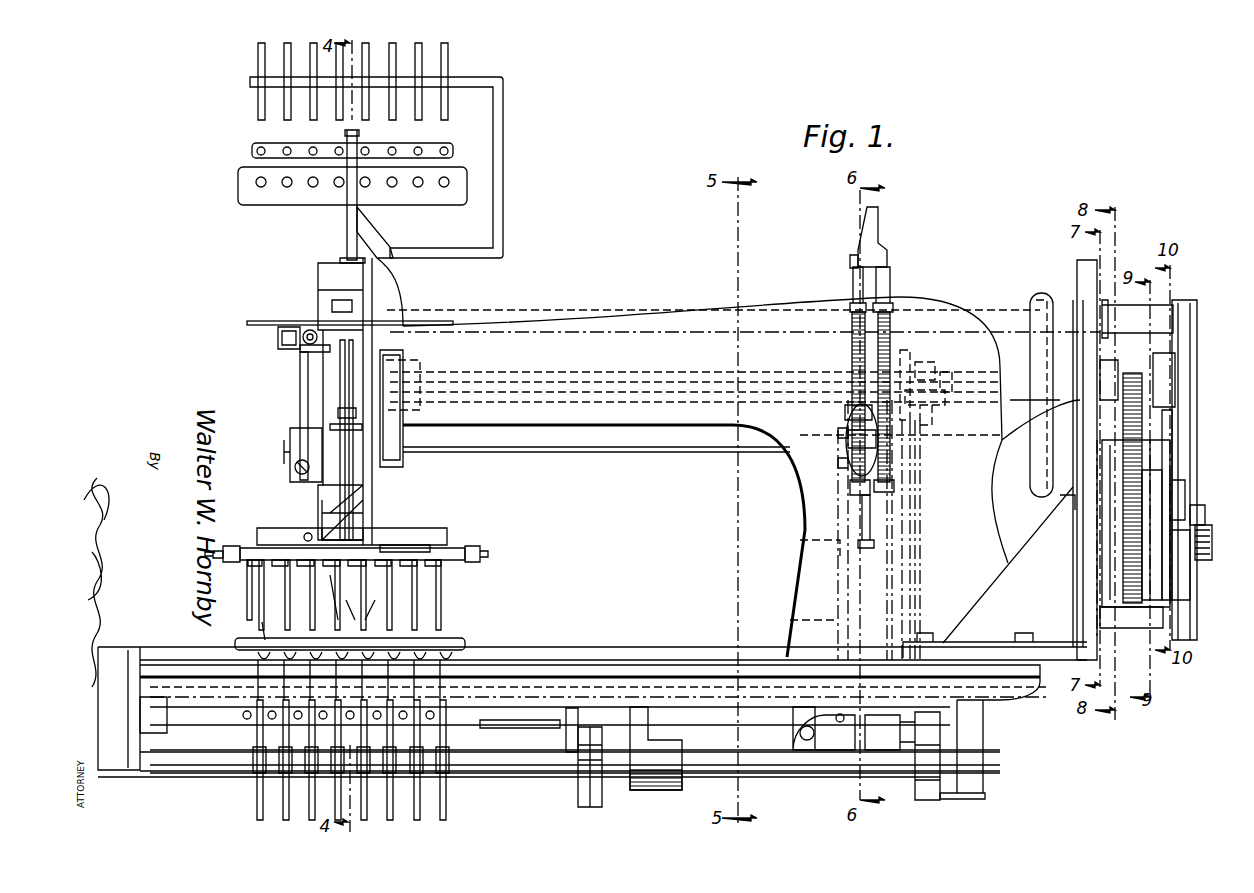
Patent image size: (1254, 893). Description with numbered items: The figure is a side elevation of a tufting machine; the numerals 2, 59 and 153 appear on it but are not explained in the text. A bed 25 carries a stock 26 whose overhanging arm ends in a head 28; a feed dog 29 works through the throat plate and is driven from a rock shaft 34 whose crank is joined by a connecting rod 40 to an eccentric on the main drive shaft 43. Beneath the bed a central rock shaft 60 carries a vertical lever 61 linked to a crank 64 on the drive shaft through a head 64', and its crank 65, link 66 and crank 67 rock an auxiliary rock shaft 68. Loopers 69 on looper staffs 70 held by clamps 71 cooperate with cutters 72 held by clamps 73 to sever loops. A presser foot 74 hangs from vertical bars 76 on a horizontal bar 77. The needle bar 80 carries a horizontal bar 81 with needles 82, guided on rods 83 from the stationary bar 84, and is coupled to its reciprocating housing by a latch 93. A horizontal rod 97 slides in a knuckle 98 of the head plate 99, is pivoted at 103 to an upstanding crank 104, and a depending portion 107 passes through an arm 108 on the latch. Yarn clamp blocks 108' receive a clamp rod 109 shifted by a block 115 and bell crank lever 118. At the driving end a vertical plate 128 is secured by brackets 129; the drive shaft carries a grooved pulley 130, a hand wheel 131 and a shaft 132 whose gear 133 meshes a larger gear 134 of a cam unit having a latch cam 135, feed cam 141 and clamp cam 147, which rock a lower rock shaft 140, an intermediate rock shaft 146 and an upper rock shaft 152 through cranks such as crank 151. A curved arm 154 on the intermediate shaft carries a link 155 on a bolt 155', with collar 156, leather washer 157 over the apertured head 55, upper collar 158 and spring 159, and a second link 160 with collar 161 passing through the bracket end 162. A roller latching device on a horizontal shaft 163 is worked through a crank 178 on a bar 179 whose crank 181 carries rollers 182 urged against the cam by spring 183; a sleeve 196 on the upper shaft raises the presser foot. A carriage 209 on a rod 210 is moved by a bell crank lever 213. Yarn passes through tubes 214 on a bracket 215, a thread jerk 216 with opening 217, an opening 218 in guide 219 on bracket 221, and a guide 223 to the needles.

The arm 2 is at (708, 420).
The bed 25 is at (648, 660).
The stock 26 is at (830, 580).
The head 28 is at (395, 530).
The feed dog 29 is at (455, 640).
The rock shaft 34 is at (718, 714).
The connecting rod 40 is at (875, 552).
The main drive shaft 43 is at (767, 372).
The apertured head 55 is at (845, 440).
The screw 59 is at (866, 518).
The central rock shaft 60 is at (535, 771).
The vertical lever 61 is at (916, 728).
The crank 64 is at (939, 387).
The head 64' is at (957, 362).
The crank 65 is at (604, 780).
The link 66 is at (582, 785).
The crank 67 is at (566, 732).
The auxiliary rock shaft 68 is at (500, 722).
The loopers 69 is at (365, 655).
The looper staff 70 is at (283, 805).
The clamp 71 is at (292, 765).
The cutter or hack saw 72 is at (300, 655).
The adjustable clamp 73 is at (262, 720).
The presser foot 74 is at (262, 630).
The vertical bars 76 is at (259, 610).
The horizontal bar 77 is at (334, 575).
The needle bar 80 is at (347, 236).
The horizontal bar 81 is at (440, 552).
The needles 82 is at (356, 620).
The vertical guide rods 83 is at (270, 600).
The stationary horizontal bar 84 is at (270, 528).
The latch 93 is at (340, 400).
The horizontal rod 97 is at (308, 330).
The apertured knuckle 98 is at (300, 349).
The head plate 99 is at (340, 283).
The pivot 103 is at (279, 339).
The upstanding crank 104 is at (300, 382).
The depending portion 107 is at (363, 475).
The arm 108 is at (304, 419).
The blocks 108' is at (414, 529).
The clamp rod 109 is at (470, 553).
The shifting block 115 is at (231, 548).
The bell crank lever 118 is at (222, 558).
The vertical plate 128 is at (1077, 266).
The brackets 129 is at (1000, 613).
The grooved pulley 130 is at (1005, 418).
The hand wheel 131 is at (1033, 296).
The shaft 132 is at (1110, 375).
The gear 133 is at (1132, 380).
The larger gear 134 is at (1140, 481).
The inner latch cam 135 is at (1110, 560).
The lower horizontal rock shaft 140 is at (635, 450).
The intermediate feed cam 141 is at (1180, 576).
The intermediate horizontal rock shaft 146 is at (622, 380).
The outer clamp cam 147 is at (1205, 515).
The crank 151 is at (1192, 358).
The upper rock shaft 152 is at (1122, 325).
The spring 153 is at (1210, 552).
The curved arm 154 is at (886, 262).
The link 155 is at (828, 289).
The bolt 155' is at (824, 258).
The collar 156 is at (838, 435).
The leather washer 157 is at (850, 445).
The upper collar 158 is at (852, 318).
The compressible coil spring 159 is at (845, 412).
The second link 160 is at (890, 290).
The collar 161 is at (890, 322).
The horizontal end 162 is at (895, 494).
The horizontal shaft 163 is at (895, 470).
The crank 178 is at (1095, 593).
The horizontal bar 179 is at (1160, 622).
The upstanding crank 181 is at (1185, 500).
The rollers 182 is at (1172, 463).
The retractile coil spring 183 is at (1212, 540).
The sleeve 196 is at (522, 322).
The carriage 209 is at (800, 540).
The rod 210 is at (790, 620).
The bell crank lever 213 is at (832, 740).
The vertical tubes 214 is at (284, 63).
The stationary bracket 215 is at (503, 96).
The thread jerk 216 is at (436, 151).
The guide opening 217 is at (261, 148).
The opening 218 is at (448, 178).
The stationary guide 219 is at (450, 195).
The stationary bracket 221 is at (381, 213).
The stationary guide 223 is at (268, 322).